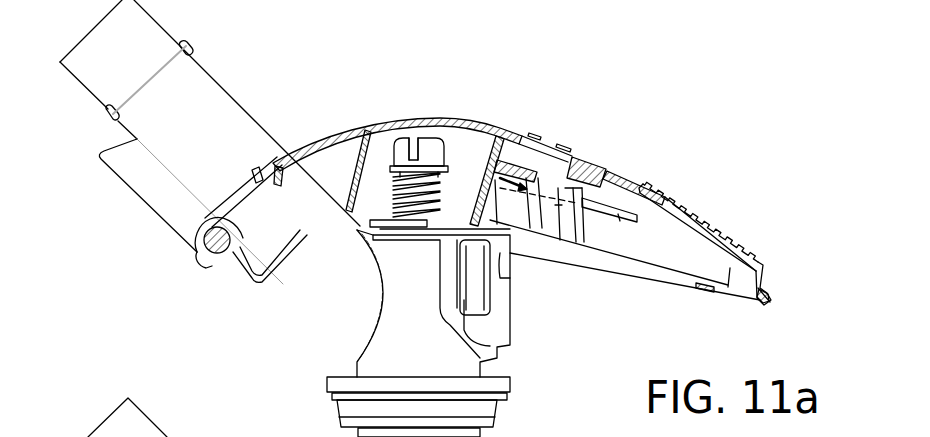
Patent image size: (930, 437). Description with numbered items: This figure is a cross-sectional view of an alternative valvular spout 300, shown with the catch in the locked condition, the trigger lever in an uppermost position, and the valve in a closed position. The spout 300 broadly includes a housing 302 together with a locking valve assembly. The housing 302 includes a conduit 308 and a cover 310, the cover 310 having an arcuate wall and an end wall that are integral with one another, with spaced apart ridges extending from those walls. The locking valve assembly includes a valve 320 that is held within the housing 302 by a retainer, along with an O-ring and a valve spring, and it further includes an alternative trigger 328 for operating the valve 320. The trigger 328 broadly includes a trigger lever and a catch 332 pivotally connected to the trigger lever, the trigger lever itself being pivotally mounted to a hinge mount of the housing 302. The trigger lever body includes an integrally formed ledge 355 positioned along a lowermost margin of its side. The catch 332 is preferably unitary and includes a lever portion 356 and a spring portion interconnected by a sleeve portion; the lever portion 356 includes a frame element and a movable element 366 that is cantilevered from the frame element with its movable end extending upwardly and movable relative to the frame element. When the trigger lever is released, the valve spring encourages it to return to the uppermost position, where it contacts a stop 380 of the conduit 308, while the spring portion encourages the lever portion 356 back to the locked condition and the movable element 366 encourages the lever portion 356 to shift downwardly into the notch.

The valvular spout 300 is at (647, 97).
The housing 302 is at (317, 303).
The conduit 308 is at (203, 87).
The cover 310 is at (507, 315).
The valve 320 is at (450, 123).
The alternative trigger 328 is at (627, 177).
The catch 332 is at (623, 243).
The ledge 355 is at (710, 293).
The lever portion 356 is at (545, 222).
The movable element 366 is at (540, 177).
The stop 380 is at (270, 173).